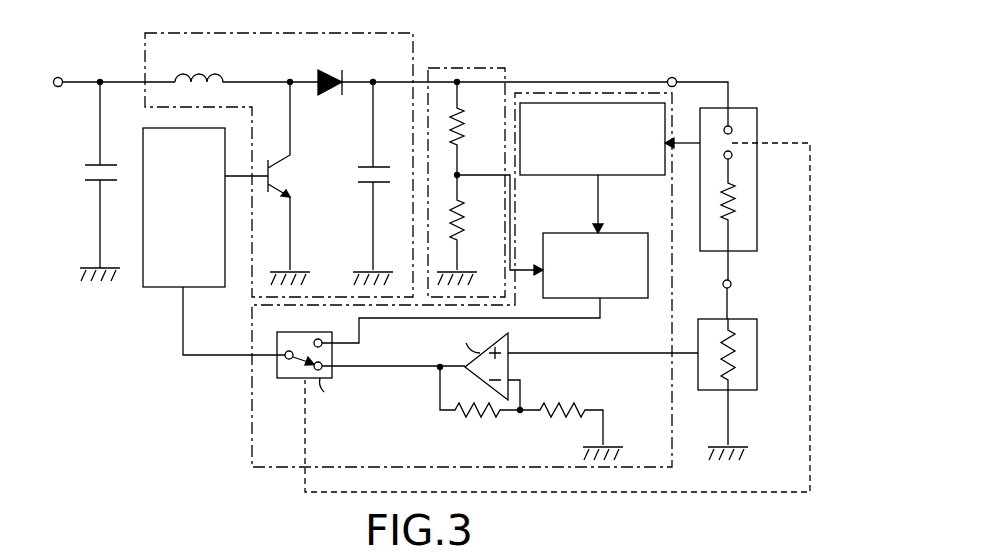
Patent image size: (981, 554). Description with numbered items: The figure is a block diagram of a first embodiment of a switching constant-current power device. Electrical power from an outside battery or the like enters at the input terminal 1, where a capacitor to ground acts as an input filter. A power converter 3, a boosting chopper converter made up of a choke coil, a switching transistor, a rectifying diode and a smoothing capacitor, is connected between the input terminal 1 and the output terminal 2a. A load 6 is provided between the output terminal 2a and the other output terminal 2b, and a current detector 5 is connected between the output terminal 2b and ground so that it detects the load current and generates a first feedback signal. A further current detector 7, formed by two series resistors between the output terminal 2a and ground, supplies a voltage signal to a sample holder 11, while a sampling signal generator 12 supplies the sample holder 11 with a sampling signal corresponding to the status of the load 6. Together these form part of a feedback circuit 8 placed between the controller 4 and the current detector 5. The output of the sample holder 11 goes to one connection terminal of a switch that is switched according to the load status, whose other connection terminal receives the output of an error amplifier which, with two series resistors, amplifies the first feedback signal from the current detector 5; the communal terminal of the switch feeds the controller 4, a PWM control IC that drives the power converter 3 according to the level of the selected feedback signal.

The input terminal 1 is at (58, 77).
The output terminal 2a is at (673, 77).
The output terminal 2b is at (731, 284).
The power converter 3 is at (145, 44).
The controller 4 is at (160, 287).
The current detector 5 is at (748, 390).
The load 6 is at (748, 108).
The current detector 7 is at (478, 68).
The feedback circuit 8 is at (440, 280).
The sample holder 11 is at (618, 298).
The sampling signal generator 12 is at (563, 175).